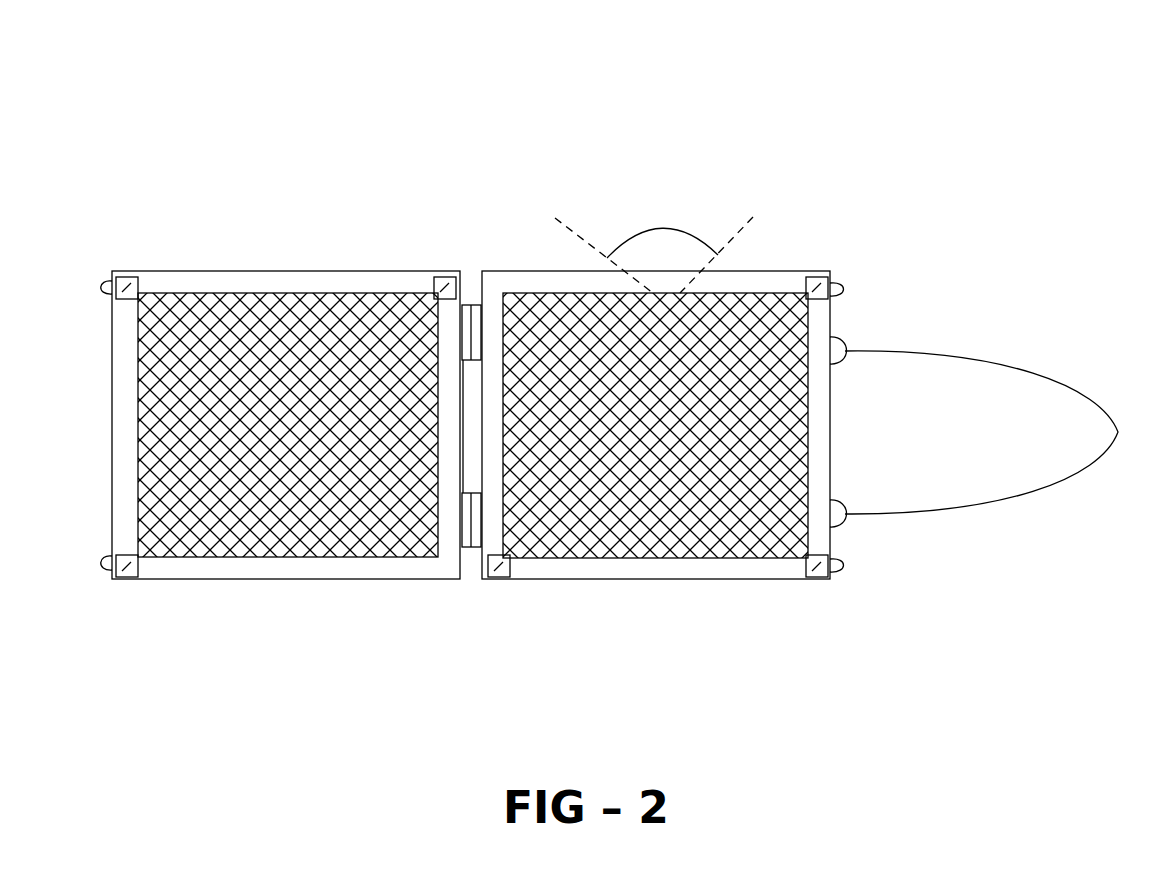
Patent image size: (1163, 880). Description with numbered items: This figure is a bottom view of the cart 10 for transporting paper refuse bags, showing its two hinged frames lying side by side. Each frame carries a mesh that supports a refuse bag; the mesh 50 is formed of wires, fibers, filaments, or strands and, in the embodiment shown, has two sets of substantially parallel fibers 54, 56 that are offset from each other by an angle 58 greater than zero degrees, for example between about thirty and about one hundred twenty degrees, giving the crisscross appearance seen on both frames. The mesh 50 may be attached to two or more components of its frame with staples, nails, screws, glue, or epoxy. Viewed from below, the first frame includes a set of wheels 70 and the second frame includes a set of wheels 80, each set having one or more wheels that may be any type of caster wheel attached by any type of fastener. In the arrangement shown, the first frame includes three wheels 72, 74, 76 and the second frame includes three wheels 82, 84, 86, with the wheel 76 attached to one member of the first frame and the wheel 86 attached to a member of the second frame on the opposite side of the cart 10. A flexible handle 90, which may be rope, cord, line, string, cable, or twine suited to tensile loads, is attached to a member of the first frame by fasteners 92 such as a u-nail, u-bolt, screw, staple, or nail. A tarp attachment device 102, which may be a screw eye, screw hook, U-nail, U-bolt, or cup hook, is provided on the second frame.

The cart 10 is at (666, 88).
The mesh 50 is at (636, 476).
The set of substantially parallel fibers 54 is at (720, 350).
The set of substantially parallel fibers 56 is at (608, 365).
The angle 58 is at (654, 246).
The set of wheels 70 is at (763, 622).
The wheel 72 is at (818, 285).
The wheel 74 is at (815, 581).
The wheel 76 is at (495, 573).
The set of wheels 80 is at (58, 236).
The wheel 82 is at (108, 294).
The wheel 84 is at (127, 580).
The wheel 86 is at (444, 288).
The handle 90 is at (1018, 372).
The fasteners 92 is at (838, 342).
The tarp attachment device 102 is at (102, 560).